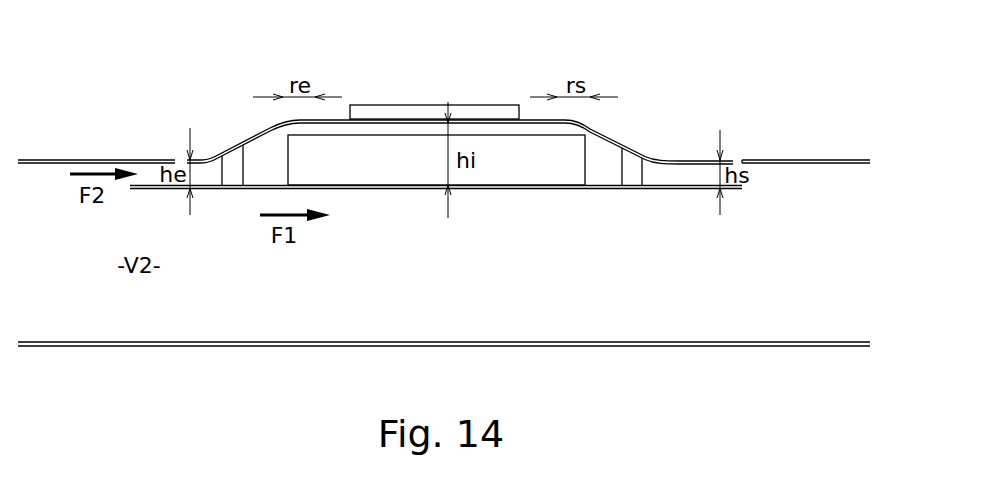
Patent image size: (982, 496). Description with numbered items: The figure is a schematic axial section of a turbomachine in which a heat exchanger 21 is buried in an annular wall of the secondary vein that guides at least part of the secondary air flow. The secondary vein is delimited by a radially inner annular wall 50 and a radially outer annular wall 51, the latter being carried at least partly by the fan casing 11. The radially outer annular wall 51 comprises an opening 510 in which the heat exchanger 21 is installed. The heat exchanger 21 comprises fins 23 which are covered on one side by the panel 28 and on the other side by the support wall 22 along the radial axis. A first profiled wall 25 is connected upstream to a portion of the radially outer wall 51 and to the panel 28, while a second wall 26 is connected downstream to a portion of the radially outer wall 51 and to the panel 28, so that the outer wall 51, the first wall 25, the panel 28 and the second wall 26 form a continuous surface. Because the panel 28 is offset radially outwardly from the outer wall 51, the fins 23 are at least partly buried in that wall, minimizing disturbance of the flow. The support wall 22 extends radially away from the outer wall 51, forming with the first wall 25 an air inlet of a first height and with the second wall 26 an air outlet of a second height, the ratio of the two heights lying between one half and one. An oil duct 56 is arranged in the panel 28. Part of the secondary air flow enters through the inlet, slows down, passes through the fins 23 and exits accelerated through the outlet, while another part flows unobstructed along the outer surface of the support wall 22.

The fan casing 11 is at (803, 160).
The heat exchanger 21 is at (436, 153).
The support wall 22 is at (502, 190).
The fins 23 is at (436, 160).
The first profiled wall 25 is at (252, 128).
The second wall 26 is at (642, 127).
The panel 28 is at (472, 118).
The radially inner annular wall 50 is at (810, 341).
The radially outer annular wall 51 is at (780, 165).
The oil duct 56 is at (412, 108).
The opening 510 is at (737, 157).